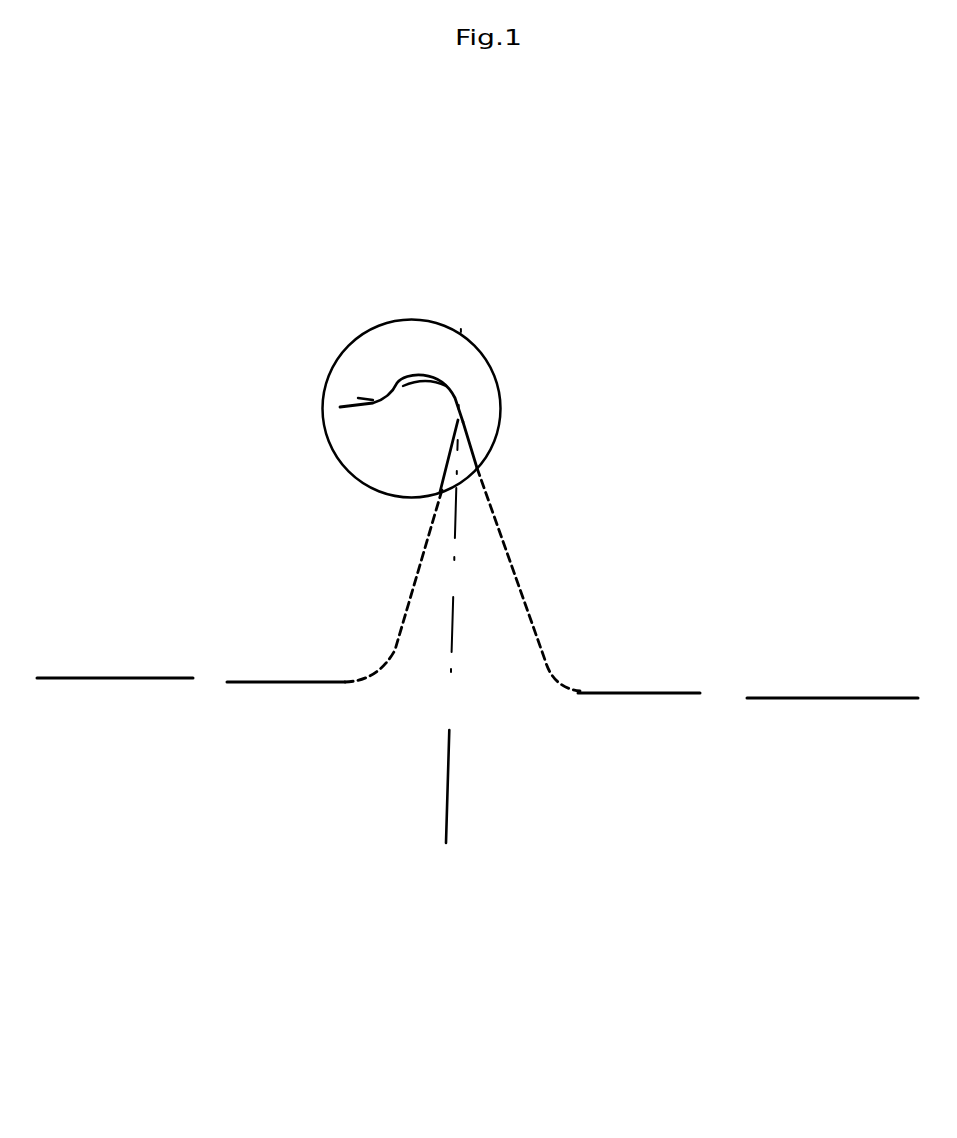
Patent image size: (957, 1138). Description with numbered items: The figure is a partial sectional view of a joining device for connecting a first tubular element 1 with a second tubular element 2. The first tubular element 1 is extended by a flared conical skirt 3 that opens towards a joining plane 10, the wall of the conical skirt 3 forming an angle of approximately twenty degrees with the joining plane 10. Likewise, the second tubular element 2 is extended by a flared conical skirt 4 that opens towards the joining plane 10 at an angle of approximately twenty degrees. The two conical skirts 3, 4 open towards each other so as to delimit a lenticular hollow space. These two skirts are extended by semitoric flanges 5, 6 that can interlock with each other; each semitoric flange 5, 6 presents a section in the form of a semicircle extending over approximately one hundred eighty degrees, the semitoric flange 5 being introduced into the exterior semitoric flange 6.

The first tubular element 1 is at (163, 676).
The second tubular element 2 is at (800, 698).
The conical skirt 3 is at (295, 681).
The conical skirt 4 is at (635, 693).
The semitoric flange 5 is at (433, 405).
The semitoric flange 6 is at (475, 370).
The joining plane 10 is at (486, 290).